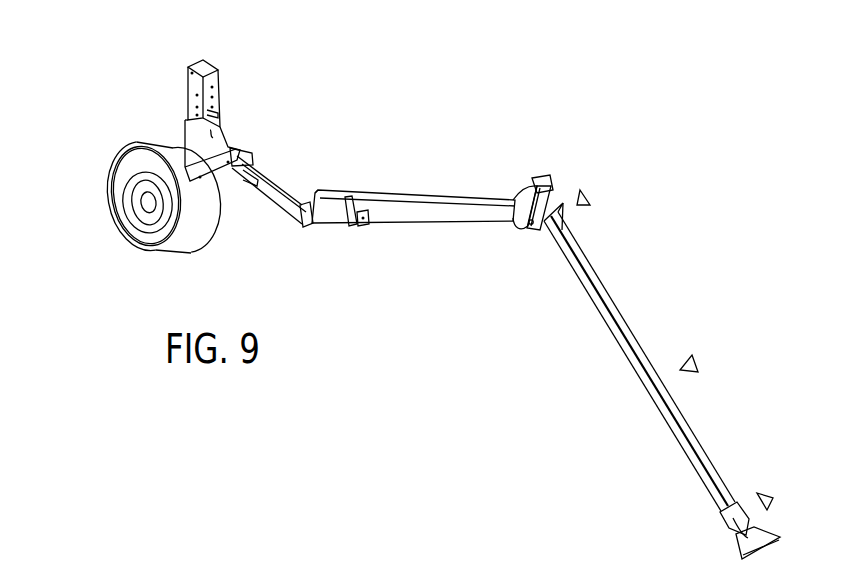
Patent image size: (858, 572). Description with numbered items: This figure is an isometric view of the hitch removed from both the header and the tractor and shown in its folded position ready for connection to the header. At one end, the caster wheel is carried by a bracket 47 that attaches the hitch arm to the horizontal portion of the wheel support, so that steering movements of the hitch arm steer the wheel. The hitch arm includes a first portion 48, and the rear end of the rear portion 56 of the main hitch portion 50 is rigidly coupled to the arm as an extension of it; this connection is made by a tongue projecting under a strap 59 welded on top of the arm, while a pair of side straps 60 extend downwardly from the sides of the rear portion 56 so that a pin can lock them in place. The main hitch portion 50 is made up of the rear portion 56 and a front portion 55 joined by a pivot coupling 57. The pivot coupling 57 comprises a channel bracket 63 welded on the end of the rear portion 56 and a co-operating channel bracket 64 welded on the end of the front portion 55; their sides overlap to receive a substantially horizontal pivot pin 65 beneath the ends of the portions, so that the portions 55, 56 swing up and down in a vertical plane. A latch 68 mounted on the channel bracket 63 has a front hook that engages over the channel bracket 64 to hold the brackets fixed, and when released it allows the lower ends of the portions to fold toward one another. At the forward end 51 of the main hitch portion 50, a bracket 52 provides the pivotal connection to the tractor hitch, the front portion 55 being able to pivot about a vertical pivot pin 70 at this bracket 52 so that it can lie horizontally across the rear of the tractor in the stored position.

The bracket 47 is at (247, 157).
The first portion of the hitch arm 48 is at (274, 204).
The main hitch portion 50 is at (694, 355).
The forward end 51 is at (768, 495).
The bracket 52 is at (765, 552).
The front portion 55 is at (617, 313).
The rear portion 56 is at (458, 208).
The pivot coupling 57 is at (591, 197).
The strap 59 is at (312, 226).
The side straps 60 is at (350, 226).
The channel bracket 63 is at (522, 218).
The channel bracket 64 is at (545, 242).
The pivot pin 65 is at (530, 232).
The latch 68 is at (541, 178).
The vertical pivot pin 70 is at (726, 520).